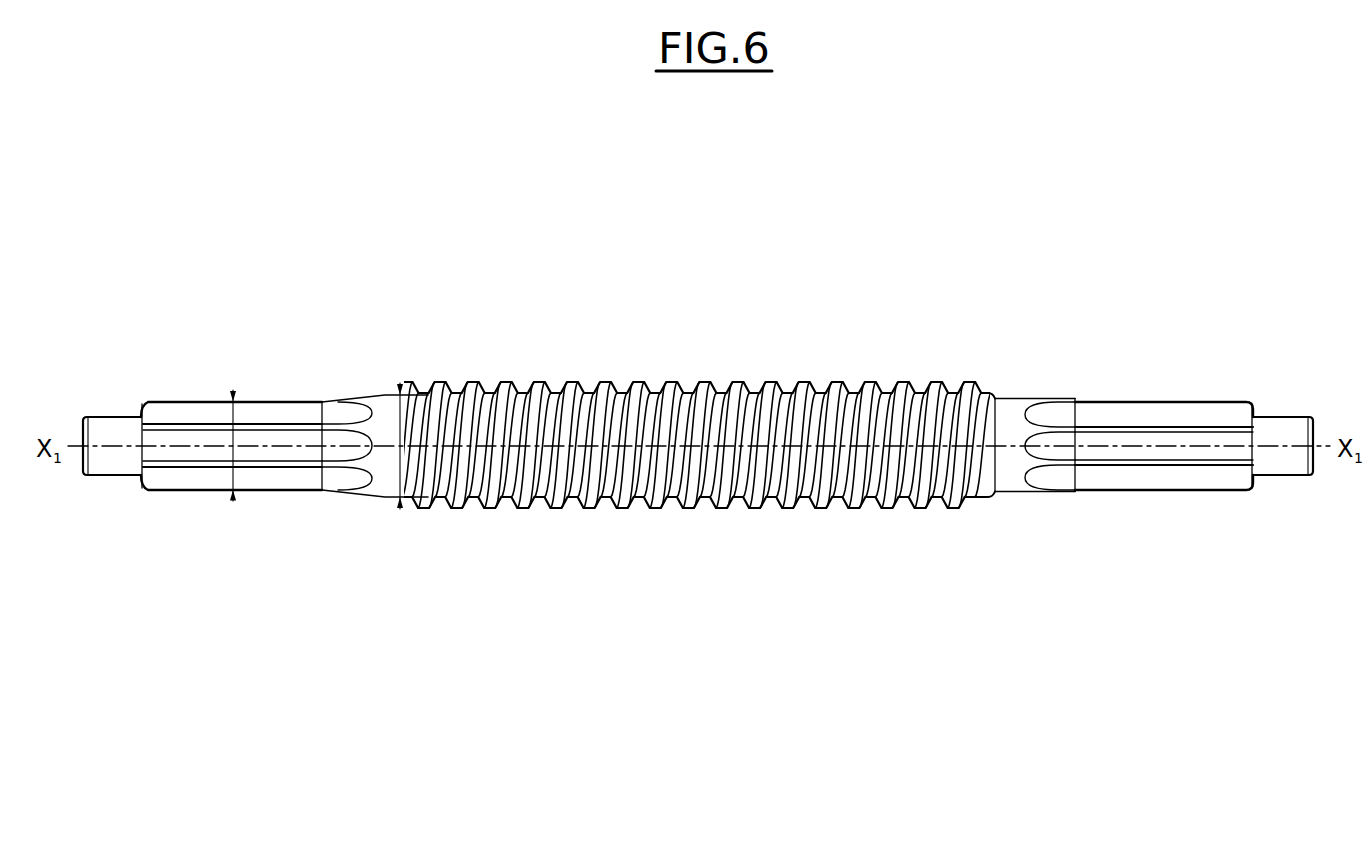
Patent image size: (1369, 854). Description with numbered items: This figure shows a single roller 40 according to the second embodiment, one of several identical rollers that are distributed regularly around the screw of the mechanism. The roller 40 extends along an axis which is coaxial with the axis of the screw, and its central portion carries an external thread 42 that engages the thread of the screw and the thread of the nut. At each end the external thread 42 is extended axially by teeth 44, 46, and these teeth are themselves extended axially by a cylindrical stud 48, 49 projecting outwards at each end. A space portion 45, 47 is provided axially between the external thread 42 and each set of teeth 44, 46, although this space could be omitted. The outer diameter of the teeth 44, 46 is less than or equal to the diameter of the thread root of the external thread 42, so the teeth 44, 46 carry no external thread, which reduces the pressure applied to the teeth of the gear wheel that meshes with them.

The roller 40 is at (1081, 280).
The external thread 42 is at (698, 387).
The teeth 44 is at (190, 408).
The space portion 45 is at (382, 402).
The teeth 46 is at (1133, 408).
The space portion 47 is at (1010, 403).
The cylindrical stud 48 is at (104, 422).
The cylindrical stud 49 is at (1282, 420).